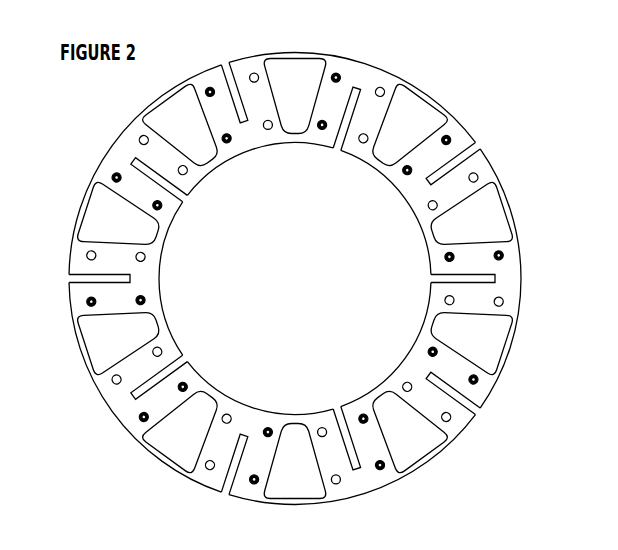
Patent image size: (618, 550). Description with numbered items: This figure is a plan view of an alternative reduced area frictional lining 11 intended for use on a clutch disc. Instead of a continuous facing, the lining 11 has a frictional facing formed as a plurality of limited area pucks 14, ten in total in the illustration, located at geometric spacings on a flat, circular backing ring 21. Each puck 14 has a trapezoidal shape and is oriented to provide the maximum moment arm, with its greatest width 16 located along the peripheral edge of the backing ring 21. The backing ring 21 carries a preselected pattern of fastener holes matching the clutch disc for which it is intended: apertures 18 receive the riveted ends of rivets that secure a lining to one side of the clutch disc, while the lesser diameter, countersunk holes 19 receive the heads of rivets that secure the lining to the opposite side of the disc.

The lining 11 is at (78, 146).
The pucks 14 is at (290, 78).
The greatest width 16 is at (90, 352).
The apertures 18 is at (295, 278).
The holes 19 is at (291, 278).
The backing ring 21 is at (77, 300).